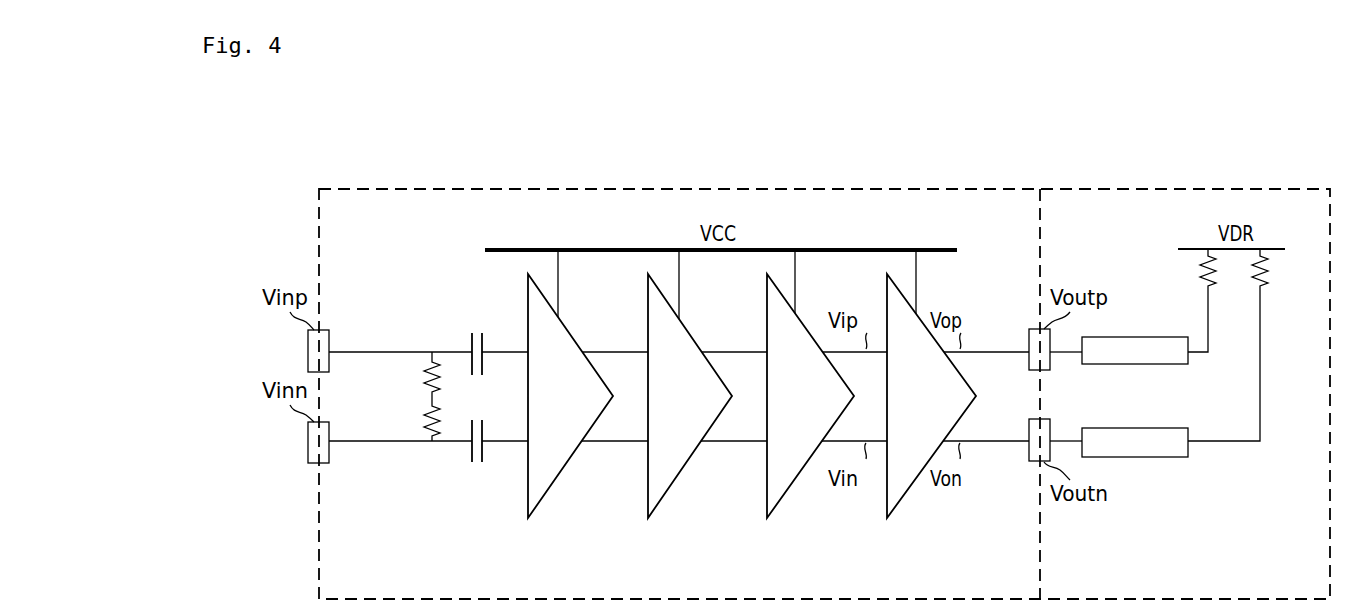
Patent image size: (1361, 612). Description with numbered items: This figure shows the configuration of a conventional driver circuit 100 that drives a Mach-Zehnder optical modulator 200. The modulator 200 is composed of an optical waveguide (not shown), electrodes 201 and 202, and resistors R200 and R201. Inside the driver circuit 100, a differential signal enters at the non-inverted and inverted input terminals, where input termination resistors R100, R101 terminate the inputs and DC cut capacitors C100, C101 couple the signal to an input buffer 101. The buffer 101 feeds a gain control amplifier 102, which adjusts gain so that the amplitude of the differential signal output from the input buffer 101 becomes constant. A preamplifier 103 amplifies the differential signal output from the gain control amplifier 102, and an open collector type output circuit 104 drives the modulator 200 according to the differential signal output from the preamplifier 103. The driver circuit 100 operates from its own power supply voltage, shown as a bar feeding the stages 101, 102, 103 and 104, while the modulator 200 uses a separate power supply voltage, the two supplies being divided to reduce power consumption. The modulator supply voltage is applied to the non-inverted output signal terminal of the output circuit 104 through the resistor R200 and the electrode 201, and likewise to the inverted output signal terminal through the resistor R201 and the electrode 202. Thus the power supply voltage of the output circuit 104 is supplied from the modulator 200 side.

The driver circuit 100 is at (680, 189).
The Mach-Zehnder optical modulator 200 is at (1154, 189).
The input buffer 101 is at (570, 332).
The gain control amplifier 102 is at (690, 332).
The preamplifier 103 is at (778, 507).
The open collector type output circuit 104 is at (900, 507).
The electrode 201 is at (1105, 337).
The electrode 202 is at (1105, 457).
The input termination resistor R100 is at (405, 378).
The input termination resistor R101 is at (405, 422).
The DC cut capacitor C100 is at (477, 339).
The DC cut capacitor C101 is at (477, 459).
The resistor R200 is at (1182, 300).
The resistor R201 is at (1254, 345).